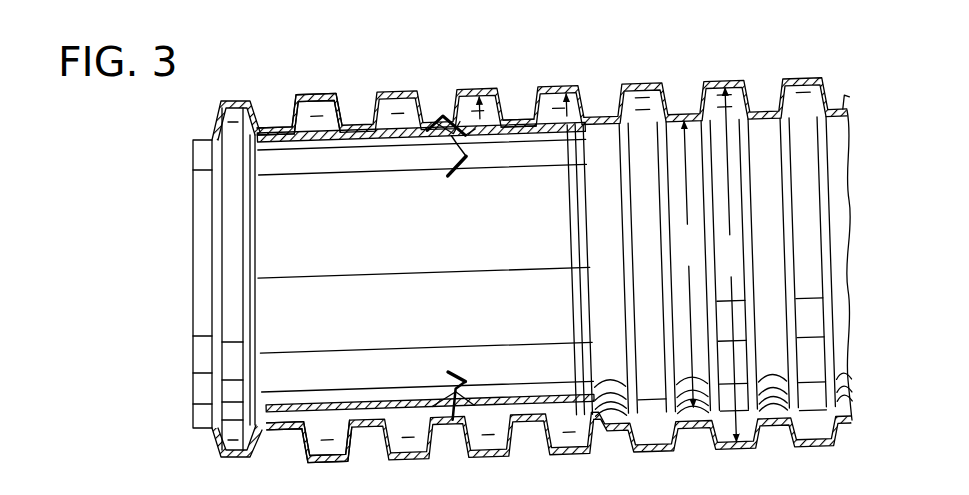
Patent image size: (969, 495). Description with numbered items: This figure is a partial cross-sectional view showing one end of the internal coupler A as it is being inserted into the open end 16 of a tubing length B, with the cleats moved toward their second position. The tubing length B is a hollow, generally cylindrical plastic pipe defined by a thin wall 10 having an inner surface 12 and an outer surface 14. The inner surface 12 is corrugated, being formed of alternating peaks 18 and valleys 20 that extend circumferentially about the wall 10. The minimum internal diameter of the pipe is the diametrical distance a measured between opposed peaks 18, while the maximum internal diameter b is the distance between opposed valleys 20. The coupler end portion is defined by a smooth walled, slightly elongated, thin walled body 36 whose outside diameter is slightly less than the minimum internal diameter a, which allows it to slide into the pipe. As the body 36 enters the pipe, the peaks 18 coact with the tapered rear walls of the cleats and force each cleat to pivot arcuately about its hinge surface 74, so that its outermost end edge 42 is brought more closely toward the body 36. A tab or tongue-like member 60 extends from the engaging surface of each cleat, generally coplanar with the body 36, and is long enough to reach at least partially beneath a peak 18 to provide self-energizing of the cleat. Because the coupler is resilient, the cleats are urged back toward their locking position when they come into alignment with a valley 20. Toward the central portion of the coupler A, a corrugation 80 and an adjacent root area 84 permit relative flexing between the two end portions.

The thin wall 10 is at (492, 73).
The inner surface 12 is at (307, 93).
The outer surface 14 is at (326, 92).
The open end 16 is at (291, 118).
The peaks 18 is at (434, 150).
The valleys 20 is at (573, 112).
The thin walled body 36 is at (281, 145).
The outermost end edge 42 is at (452, 124).
The tab or tongue-like member 60 is at (455, 165).
The hinge surface 74 is at (453, 124).
The corrugation 80 is at (227, 106).
The root area 84 is at (197, 137).
The internal coupler A is at (575, 271).
The tubing length B is at (864, 302).
The minimum internal diameter a is at (697, 261).
The maximum internal diameter b is at (737, 271).